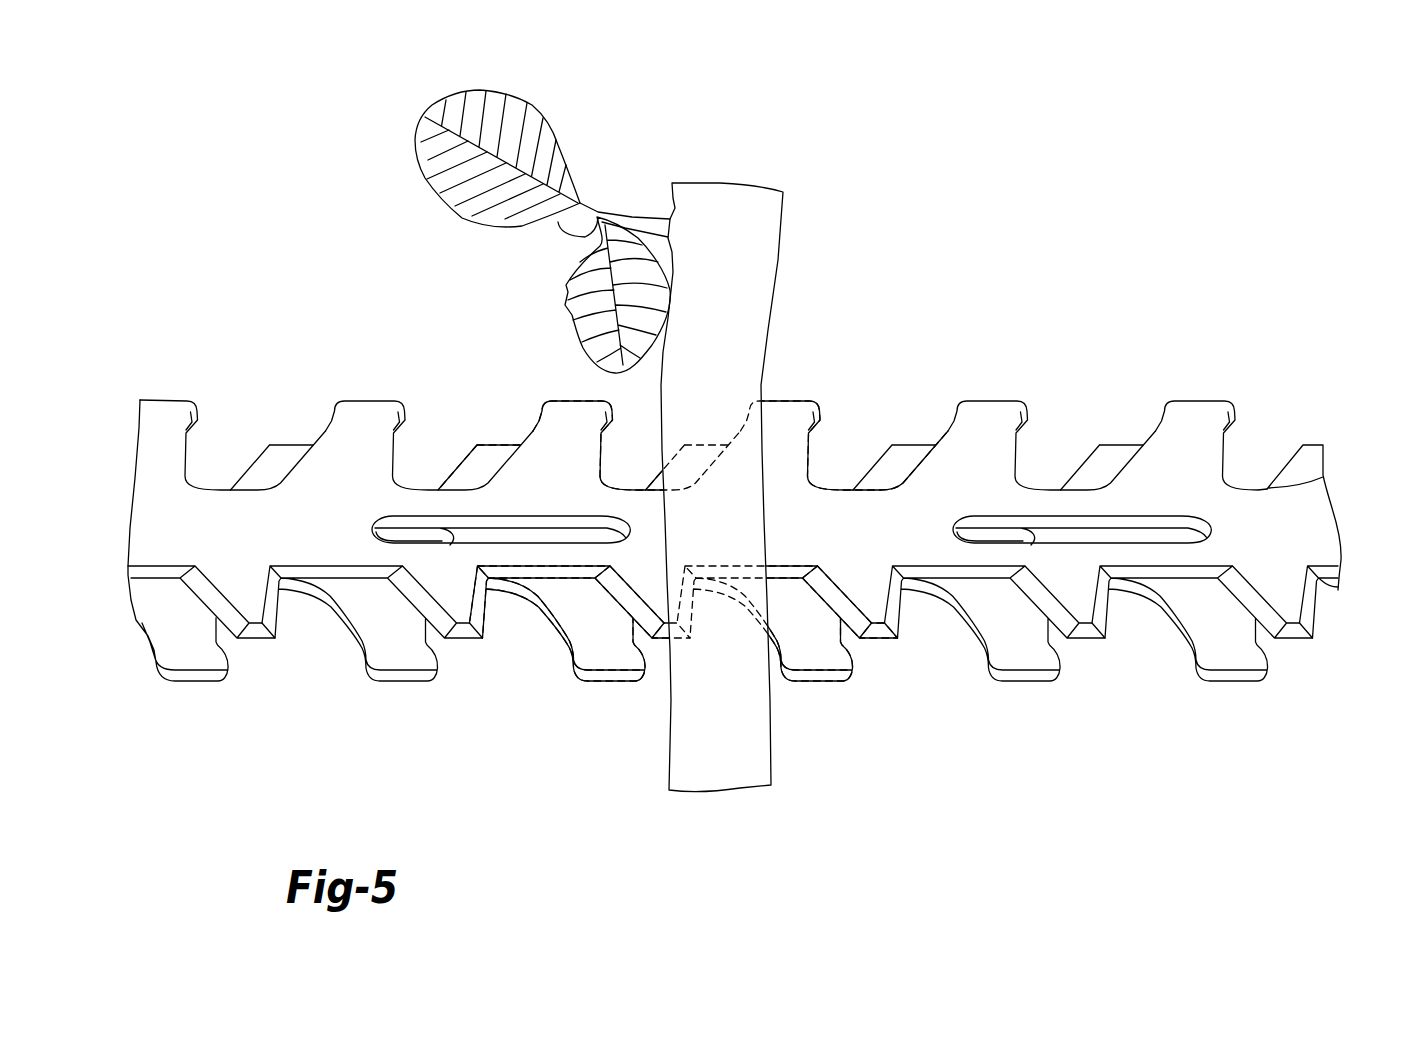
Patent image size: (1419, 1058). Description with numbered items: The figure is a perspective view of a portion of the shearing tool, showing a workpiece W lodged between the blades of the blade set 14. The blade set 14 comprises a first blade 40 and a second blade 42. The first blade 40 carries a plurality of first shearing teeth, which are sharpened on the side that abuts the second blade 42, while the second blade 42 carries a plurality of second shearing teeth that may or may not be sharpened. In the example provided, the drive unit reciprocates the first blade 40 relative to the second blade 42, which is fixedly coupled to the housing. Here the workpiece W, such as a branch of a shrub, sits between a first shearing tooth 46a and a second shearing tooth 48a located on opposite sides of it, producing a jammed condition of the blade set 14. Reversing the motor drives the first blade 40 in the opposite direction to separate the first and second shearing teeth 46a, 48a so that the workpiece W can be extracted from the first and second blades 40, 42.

The blade set 14 is at (752, 516).
The first blade 40 is at (1303, 504).
The second blade 42 is at (1222, 643).
The first shearing tooth 46a is at (640, 563).
The second shearing tooth 48a is at (806, 650).
The workpiece W is at (770, 763).